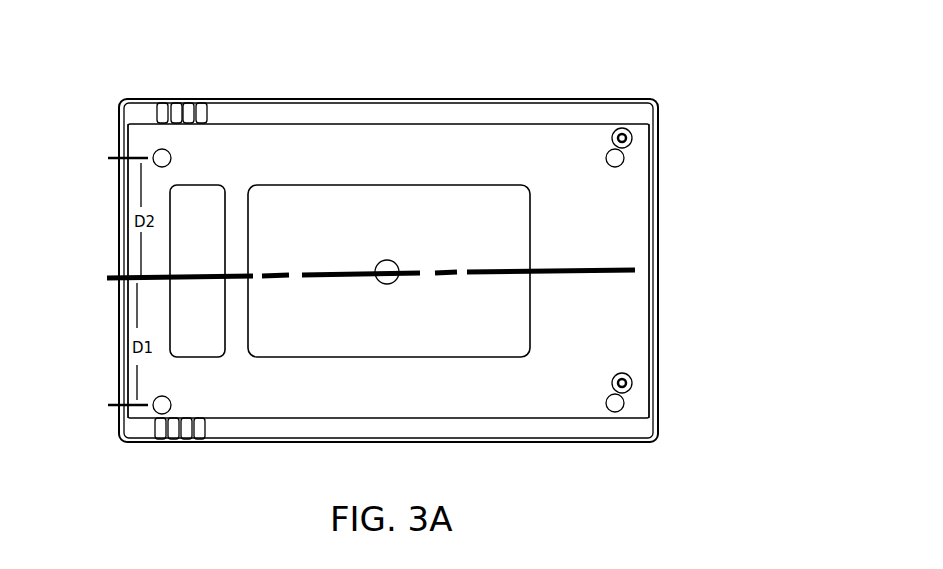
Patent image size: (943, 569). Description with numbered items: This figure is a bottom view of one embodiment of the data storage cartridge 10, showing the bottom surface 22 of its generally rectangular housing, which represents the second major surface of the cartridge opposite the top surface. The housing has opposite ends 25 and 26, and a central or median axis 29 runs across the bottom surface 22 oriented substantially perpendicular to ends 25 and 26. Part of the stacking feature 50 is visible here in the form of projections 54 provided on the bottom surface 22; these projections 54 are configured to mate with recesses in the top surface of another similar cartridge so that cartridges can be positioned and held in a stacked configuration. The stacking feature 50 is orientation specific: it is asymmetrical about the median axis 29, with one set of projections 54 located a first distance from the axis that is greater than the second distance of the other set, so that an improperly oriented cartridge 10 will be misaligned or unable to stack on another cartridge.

The data storage cartridge 10 is at (685, 72).
The bottom surface 22 is at (392, 168).
The end 25 is at (660, 234).
The end 26 is at (118, 246).
The central or median axis 29 is at (341, 267).
The stacking feature 50 is at (147, 86).
The projections 54 is at (172, 155).